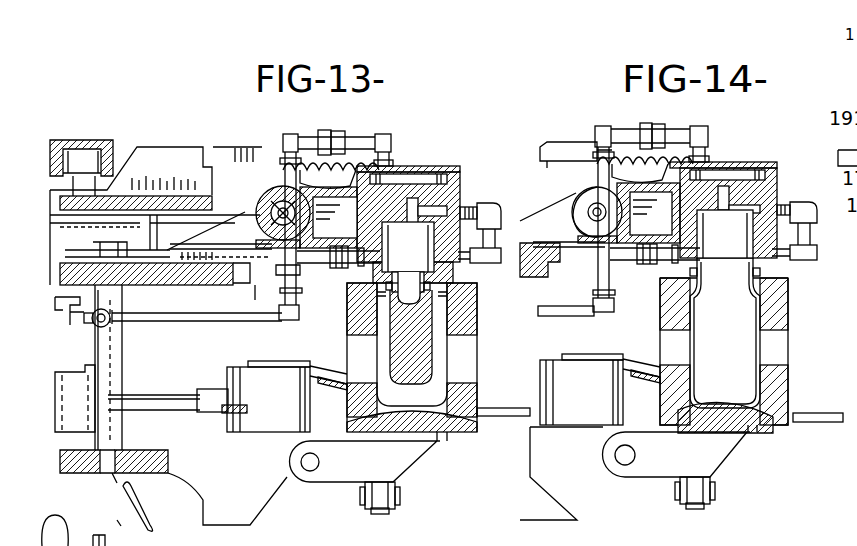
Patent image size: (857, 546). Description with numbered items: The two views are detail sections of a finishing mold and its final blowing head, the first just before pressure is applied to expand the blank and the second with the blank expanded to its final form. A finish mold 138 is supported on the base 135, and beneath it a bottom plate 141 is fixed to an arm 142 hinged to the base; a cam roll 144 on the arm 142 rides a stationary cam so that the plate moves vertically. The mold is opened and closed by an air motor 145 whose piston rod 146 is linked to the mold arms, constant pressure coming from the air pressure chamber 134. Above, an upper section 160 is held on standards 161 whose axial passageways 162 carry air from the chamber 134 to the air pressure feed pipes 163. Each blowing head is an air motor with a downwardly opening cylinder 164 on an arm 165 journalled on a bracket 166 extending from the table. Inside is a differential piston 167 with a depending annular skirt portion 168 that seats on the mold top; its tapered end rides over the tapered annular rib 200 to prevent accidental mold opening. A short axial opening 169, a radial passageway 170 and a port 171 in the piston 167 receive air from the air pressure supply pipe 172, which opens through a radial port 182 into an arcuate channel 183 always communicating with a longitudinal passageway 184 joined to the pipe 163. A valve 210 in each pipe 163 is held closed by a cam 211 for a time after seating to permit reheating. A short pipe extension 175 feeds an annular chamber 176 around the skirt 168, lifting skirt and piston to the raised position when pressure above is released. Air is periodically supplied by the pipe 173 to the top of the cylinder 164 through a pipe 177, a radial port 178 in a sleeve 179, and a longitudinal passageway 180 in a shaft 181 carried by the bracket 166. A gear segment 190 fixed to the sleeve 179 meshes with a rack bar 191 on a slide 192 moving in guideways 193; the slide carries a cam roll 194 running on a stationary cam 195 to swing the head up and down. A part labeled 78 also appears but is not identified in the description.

In FIG. 13, the base plate 78 is at (503, 393).
In FIG. 14, the base plate 78 is at (826, 417).
In FIG. 13, the air pressure chamber 134 is at (126, 445).
In FIG. 13, the base 135 is at (193, 456).
In FIG. 13, the finish mold 138 is at (466, 341).
In FIG. 14, the finish mold 138 is at (780, 343).
In FIG. 13, the bottom plate 141 is at (438, 433).
In FIG. 14, the bottom plate 141 is at (753, 430).
In FIG. 13, the arm 142 is at (342, 473).
In FIG. 14, the arm 142 is at (668, 460).
In FIG. 13, the cam roll 144 is at (386, 516).
In FIG. 14, the cam roll 144 is at (690, 511).
In FIG. 13, the air motor 145 is at (84, 372).
In FIG. 13, the piston rod 146 is at (177, 402).
In FIG. 13, the upper section 160 is at (180, 284).
In FIG. 13, the standards 161 is at (113, 303).
In FIG. 13, the axial passageways 162 is at (108, 352).
In FIG. 13, the air pressure feed pipe 163 is at (253, 320).
In FIG. 14, the air pressure feed pipe 163 is at (573, 318).
In FIG. 13, the cylinder 164 is at (456, 167).
In FIG. 14, the cylinder 164 is at (773, 162).
In FIG. 13, the arm 165 is at (331, 264).
In FIG. 14, the arm 165 is at (641, 266).
In FIG. 13, the bracket 166 is at (265, 252).
In FIG. 14, the bracket 166 is at (578, 198).
In FIG. 13, the differential piston 167 is at (411, 185).
In FIG. 14, the differential piston 167 is at (738, 178).
In FIG. 13, the annular skirt portion 168 is at (459, 288).
In FIG. 14, the annular skirt portion 168 is at (765, 270).
In FIG. 13, the axial opening 169 is at (409, 226).
In FIG. 14, the axial opening 169 is at (726, 216).
In FIG. 13, the radial passageway 170 is at (432, 212).
In FIG. 14, the radial passageway 170 is at (778, 173).
In FIG. 13, the port 171 is at (467, 212).
In FIG. 14, the port 171 is at (784, 205).
In FIG. 13, the air pressure supply pipe 172 is at (496, 212).
In FIG. 14, the air pressure supply pipe 172 is at (812, 206).
In FIG. 13, the pipe 173 is at (153, 247).
In FIG. 14, the pipe 173 is at (564, 243).
In FIG. 13, the short pipe extension 175 is at (485, 250).
In FIG. 14, the short pipe extension 175 is at (808, 232).
In FIG. 13, the annular chamber 176 is at (364, 259).
In FIG. 14, the annular chamber 176 is at (662, 262).
In FIG. 13, the pipe 177 is at (358, 128).
In FIG. 14, the pipe 177 is at (683, 134).
In FIG. 13, the radial port 178 is at (267, 196).
In FIG. 13, the sleeve 179 is at (263, 205).
In FIG. 13, the longitudinal passageway 180 is at (262, 215).
In FIG. 13, the shaft 181 is at (265, 229).
In FIG. 13, the radial port 182 is at (293, 291).
In FIG. 13, the arcuate channel 183 is at (258, 262).
In FIG. 13, the longitudinal passageway 184 is at (329, 235).
In FIG. 13, the gear segment 190 is at (275, 158).
In FIG. 14, the gear segment 190 is at (630, 152).
In FIG. 13, the rack bar 191 is at (213, 147).
In FIG. 14, the rack bar 191 is at (589, 142).
In FIG. 13, the slide 192 is at (127, 195).
In FIG. 13, the guideways 193 is at (98, 213).
In FIG. 13, the cam roll 194 is at (74, 155).
In FIG. 13, the stationary cam 195 is at (95, 140).
In FIG. 13, the tapered annular rib 200 is at (458, 300).
In FIG. 14, the tapered annular rib 200 is at (768, 275).
In FIG. 13, the valve 210 is at (110, 325).
In FIG. 13, the cam 211 is at (70, 315).